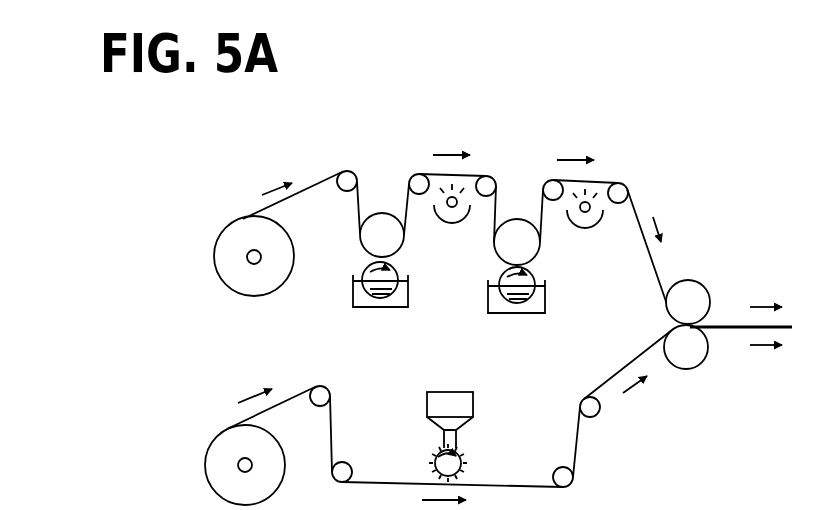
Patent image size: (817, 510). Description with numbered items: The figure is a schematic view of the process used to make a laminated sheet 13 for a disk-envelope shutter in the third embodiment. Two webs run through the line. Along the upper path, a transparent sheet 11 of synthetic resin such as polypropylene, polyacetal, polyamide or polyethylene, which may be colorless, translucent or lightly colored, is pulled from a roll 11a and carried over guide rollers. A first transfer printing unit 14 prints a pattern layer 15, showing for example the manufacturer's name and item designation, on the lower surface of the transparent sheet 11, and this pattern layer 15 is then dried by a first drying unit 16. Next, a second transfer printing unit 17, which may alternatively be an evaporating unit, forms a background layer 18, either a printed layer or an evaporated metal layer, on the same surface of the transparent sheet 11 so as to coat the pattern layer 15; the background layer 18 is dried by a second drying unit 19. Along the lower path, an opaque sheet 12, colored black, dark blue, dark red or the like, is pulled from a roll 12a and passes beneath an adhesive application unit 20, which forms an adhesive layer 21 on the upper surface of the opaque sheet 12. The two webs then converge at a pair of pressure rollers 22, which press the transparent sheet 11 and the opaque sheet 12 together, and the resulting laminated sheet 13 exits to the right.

The transparent sheet 11 is at (318, 179).
The roll 11a is at (230, 240).
The opaque sheet 12 is at (295, 390).
The roll 12a is at (218, 450).
The laminated sheet 13 is at (742, 323).
The first transfer printing unit 14 is at (372, 309).
The pattern layer 15 is at (406, 252).
The first drying unit 16 is at (437, 186).
The second transfer printing unit 17 is at (515, 315).
The background layer 18 is at (543, 262).
The second drying unit 19 is at (603, 197).
The adhesive application unit 20 is at (427, 440).
The adhesive layer 21 is at (502, 482).
The pressure rollers 22 is at (705, 308).